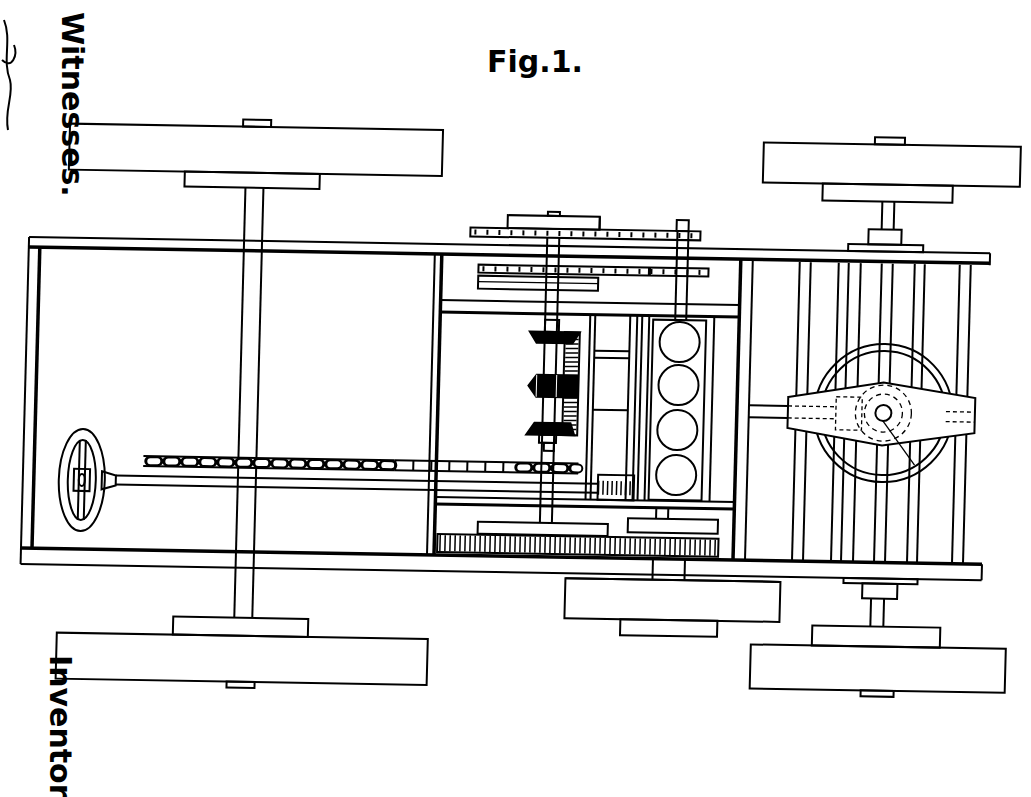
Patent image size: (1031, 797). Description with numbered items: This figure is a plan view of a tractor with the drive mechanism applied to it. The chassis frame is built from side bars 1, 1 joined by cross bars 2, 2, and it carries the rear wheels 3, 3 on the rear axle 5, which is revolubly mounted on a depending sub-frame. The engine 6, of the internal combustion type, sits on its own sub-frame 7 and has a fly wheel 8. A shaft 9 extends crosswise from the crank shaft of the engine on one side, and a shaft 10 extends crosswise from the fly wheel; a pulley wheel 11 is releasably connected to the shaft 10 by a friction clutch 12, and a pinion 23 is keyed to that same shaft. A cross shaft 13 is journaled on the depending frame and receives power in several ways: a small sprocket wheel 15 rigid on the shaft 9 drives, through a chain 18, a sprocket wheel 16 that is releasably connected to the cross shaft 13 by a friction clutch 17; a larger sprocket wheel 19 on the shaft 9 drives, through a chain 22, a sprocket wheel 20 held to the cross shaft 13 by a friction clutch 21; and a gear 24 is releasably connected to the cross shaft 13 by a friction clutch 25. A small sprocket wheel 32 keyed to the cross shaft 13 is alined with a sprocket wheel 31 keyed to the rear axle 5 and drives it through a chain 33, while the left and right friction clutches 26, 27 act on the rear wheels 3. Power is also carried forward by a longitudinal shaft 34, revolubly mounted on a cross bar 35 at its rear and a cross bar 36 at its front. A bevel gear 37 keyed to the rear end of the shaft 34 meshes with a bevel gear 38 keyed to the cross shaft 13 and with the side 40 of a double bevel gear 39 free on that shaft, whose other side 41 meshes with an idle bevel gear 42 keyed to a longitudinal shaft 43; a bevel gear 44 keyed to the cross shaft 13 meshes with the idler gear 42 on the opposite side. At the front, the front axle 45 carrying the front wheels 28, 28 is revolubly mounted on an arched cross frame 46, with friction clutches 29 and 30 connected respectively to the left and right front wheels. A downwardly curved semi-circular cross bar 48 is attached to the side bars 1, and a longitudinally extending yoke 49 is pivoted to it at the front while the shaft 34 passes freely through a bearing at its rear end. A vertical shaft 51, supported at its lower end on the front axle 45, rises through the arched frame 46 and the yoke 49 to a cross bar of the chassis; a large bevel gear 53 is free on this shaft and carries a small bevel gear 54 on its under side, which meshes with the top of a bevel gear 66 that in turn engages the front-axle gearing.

The side bars 1 is at (388, 556).
The cross bars 2 is at (40, 299).
The rear wheels 3 is at (330, 130).
The rear axle 5 is at (258, 322).
The engine 6 is at (690, 325).
The sub-frame 7 is at (545, 290).
The fly wheel 8 is at (745, 494).
The shaft 9 is at (688, 286).
The shaft 10 is at (655, 548).
The pulley wheel 11 is at (673, 595).
The friction clutch 12 is at (652, 625).
The shaft 13 is at (540, 330).
The small sprocket wheel 15 is at (690, 222).
The sprocket wheel 16 is at (598, 210).
The friction clutch 17 is at (566, 207).
The chain 18 is at (650, 220).
The sprocket wheel 19 is at (712, 258).
The sprocket wheel 20 is at (495, 270).
The friction clutch 21 is at (508, 284).
The chain 22 is at (650, 265).
The pinion 23 is at (727, 515).
The gear 24 is at (560, 546).
The friction clutch 25 is at (508, 530).
The left friction clutch 26 is at (300, 184).
The right friction clutch 27 is at (283, 618).
The front wheels 28 is at (940, 140).
The friction clutch 29 is at (951, 181).
The friction clutch 30 is at (920, 614).
The sprocket wheel 31 is at (330, 452).
The small sprocket wheel 32 is at (542, 456).
The chain 33 is at (380, 452).
The longitudinal shaft 34 is at (765, 392).
The cross bar 35 is at (592, 430).
The cross bar 36 is at (820, 412).
The bevel gear 37 is at (536, 418).
The bevel gear 38 is at (548, 438).
The double bevel gear 39 is at (535, 382).
The side 40 is at (552, 388).
The side 41 is at (535, 373).
The idle bevel gear 42 is at (584, 335).
The longitudinal shaft 43 is at (611, 350).
The bevel gear 44 is at (570, 294).
The front axle 45 is at (890, 201).
The arched cross frame 46 is at (850, 500).
The cross bar 48 is at (971, 494).
The yoke 49 is at (955, 388).
The vertical shaft 51 is at (920, 450).
The large bevel gear 53 is at (924, 342).
The small bevel gear 54 is at (908, 392).
The bevel gear 66 is at (868, 385).